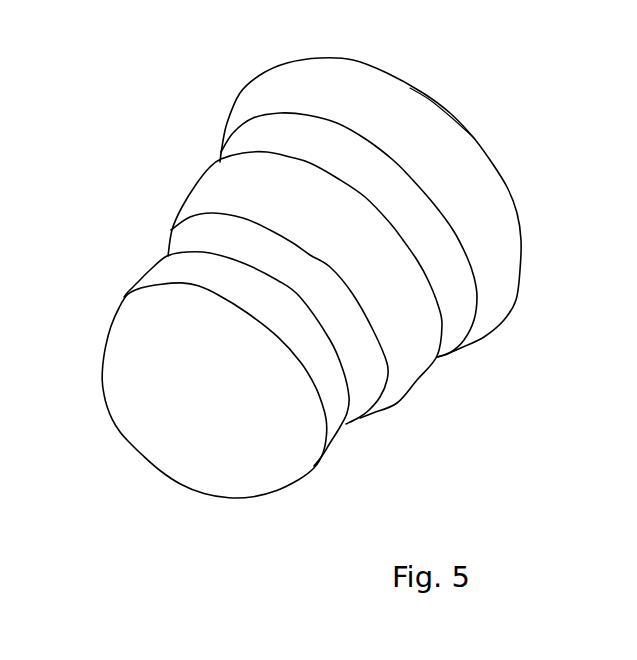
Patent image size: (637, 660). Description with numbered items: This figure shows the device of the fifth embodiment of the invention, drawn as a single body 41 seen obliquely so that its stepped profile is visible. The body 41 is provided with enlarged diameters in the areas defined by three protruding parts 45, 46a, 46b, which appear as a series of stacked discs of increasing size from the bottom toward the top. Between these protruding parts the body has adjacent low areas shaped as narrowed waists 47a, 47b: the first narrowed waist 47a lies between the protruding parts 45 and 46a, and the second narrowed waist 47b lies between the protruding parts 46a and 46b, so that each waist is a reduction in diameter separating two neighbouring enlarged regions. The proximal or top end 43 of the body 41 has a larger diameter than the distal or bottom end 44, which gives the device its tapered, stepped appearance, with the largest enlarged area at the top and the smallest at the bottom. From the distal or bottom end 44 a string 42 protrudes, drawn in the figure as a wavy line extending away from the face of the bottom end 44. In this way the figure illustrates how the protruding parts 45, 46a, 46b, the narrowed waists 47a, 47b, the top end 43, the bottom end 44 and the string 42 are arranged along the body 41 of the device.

The body 41 is at (146, 193).
The string 42 is at (164, 447).
The proximal or top end 43 is at (473, 140).
The distal or bottom end 44 is at (128, 401).
The protruding part 45 is at (499, 285).
The protruding part 46a is at (407, 376).
The protruding part 46b is at (326, 432).
The narrowed waist 47a is at (453, 336).
The narrowed waist 47b is at (360, 418).